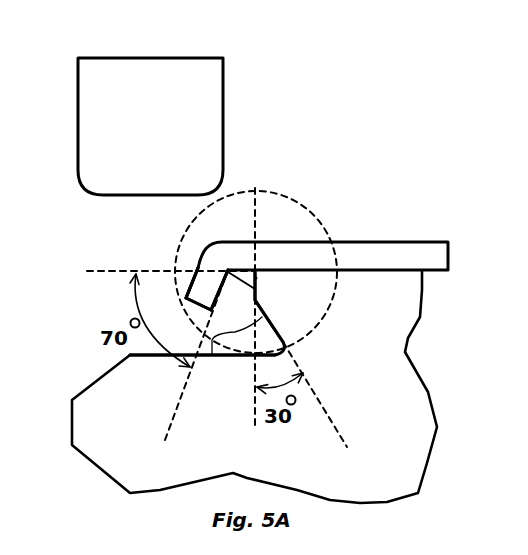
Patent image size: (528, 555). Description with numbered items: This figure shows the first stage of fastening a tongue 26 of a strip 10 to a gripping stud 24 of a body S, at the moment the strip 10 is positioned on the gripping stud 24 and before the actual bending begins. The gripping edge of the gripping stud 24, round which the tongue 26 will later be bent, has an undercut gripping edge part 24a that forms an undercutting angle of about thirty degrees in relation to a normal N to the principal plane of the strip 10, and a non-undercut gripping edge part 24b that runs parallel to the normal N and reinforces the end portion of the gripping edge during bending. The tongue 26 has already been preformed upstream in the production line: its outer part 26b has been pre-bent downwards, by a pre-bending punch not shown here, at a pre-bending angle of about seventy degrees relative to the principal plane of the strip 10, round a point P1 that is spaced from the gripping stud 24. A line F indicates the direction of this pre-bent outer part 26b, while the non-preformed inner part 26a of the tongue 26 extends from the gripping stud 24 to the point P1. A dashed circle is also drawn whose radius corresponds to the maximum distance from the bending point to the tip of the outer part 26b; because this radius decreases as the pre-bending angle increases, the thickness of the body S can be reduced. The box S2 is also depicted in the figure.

The strip 10 is at (360, 242).
The tongue 26 is at (227, 260).
The inner part 26a is at (247, 257).
The outer part 26b is at (212, 284).
The gripping stud 24 is at (383, 305).
The undercut gripping edge part 24a is at (217, 355).
The non-undercut gripping edge part 24b is at (216, 272).
The body S is at (407, 402).
The substrate member S2 is at (197, 140).
The normal N is at (255, 195).
The point P1 is at (258, 279).
The line F is at (165, 440).